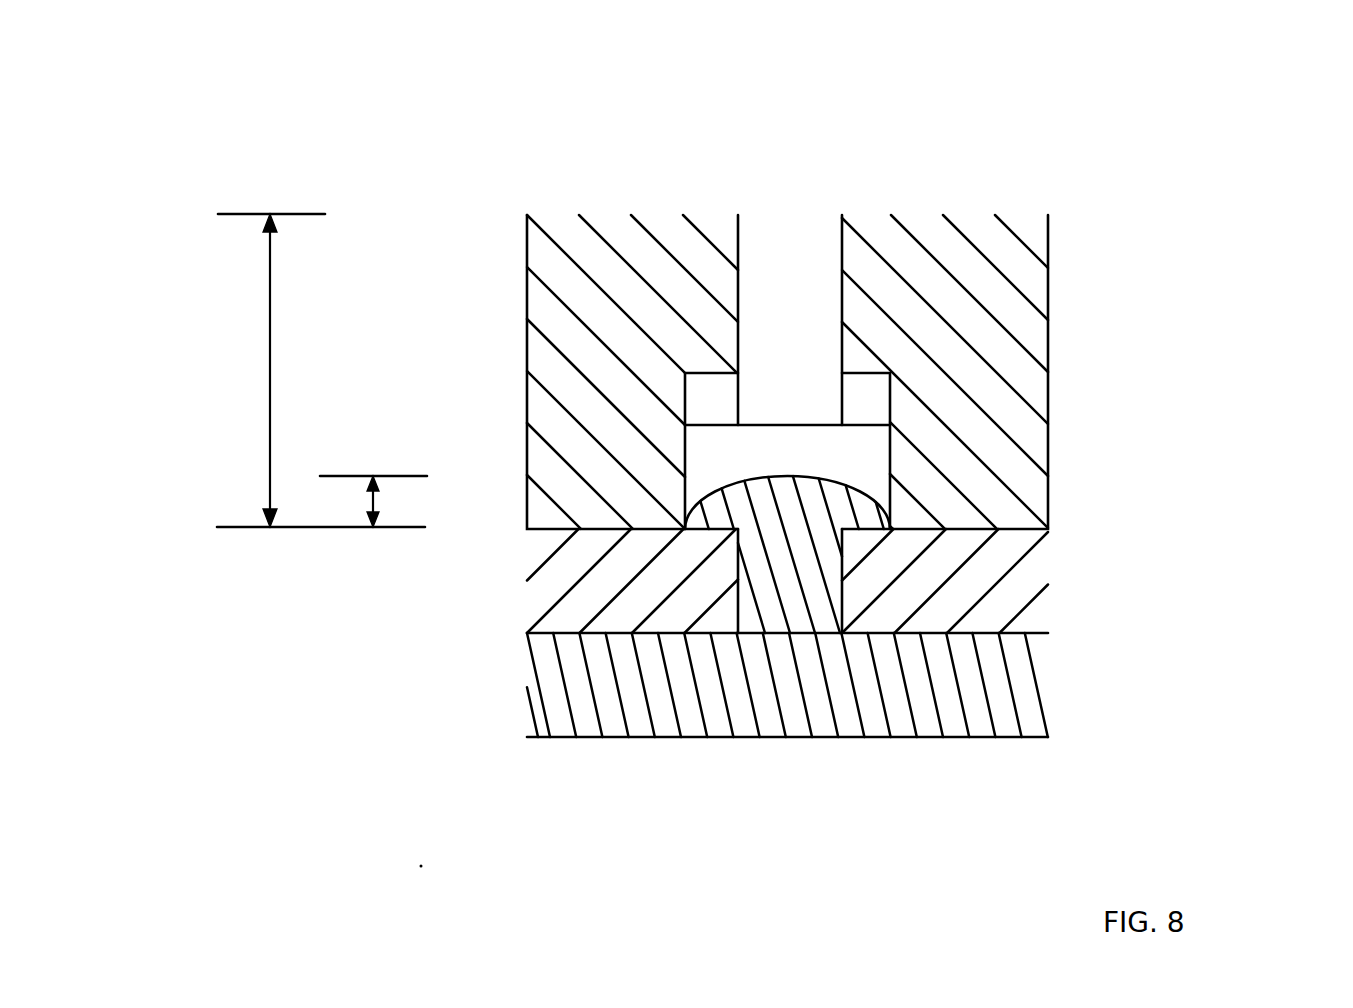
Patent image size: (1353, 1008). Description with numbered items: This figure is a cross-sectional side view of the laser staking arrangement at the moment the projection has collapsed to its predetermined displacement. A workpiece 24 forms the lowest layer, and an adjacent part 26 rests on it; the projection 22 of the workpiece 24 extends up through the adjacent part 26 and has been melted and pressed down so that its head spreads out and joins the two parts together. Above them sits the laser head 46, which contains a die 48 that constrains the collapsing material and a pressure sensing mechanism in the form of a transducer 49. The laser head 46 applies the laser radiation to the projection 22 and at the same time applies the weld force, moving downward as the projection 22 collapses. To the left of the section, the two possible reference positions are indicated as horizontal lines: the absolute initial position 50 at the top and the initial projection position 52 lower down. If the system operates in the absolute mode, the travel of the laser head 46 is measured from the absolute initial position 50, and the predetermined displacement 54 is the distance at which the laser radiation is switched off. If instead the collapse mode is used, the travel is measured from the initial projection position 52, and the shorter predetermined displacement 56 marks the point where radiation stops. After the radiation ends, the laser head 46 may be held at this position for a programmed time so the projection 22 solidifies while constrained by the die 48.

The projection 22 is at (827, 557).
The workpiece 24 is at (1008, 687).
The adjacent part 26 is at (1007, 597).
The laser head 46 is at (1023, 270).
The die 48 is at (878, 452).
The transducer 49 is at (878, 388).
The absolute initial position 50 is at (297, 213).
The initial projection position 52 is at (333, 475).
The predetermined displacement 54 is at (268, 383).
The predetermined displacement 56 is at (375, 502).